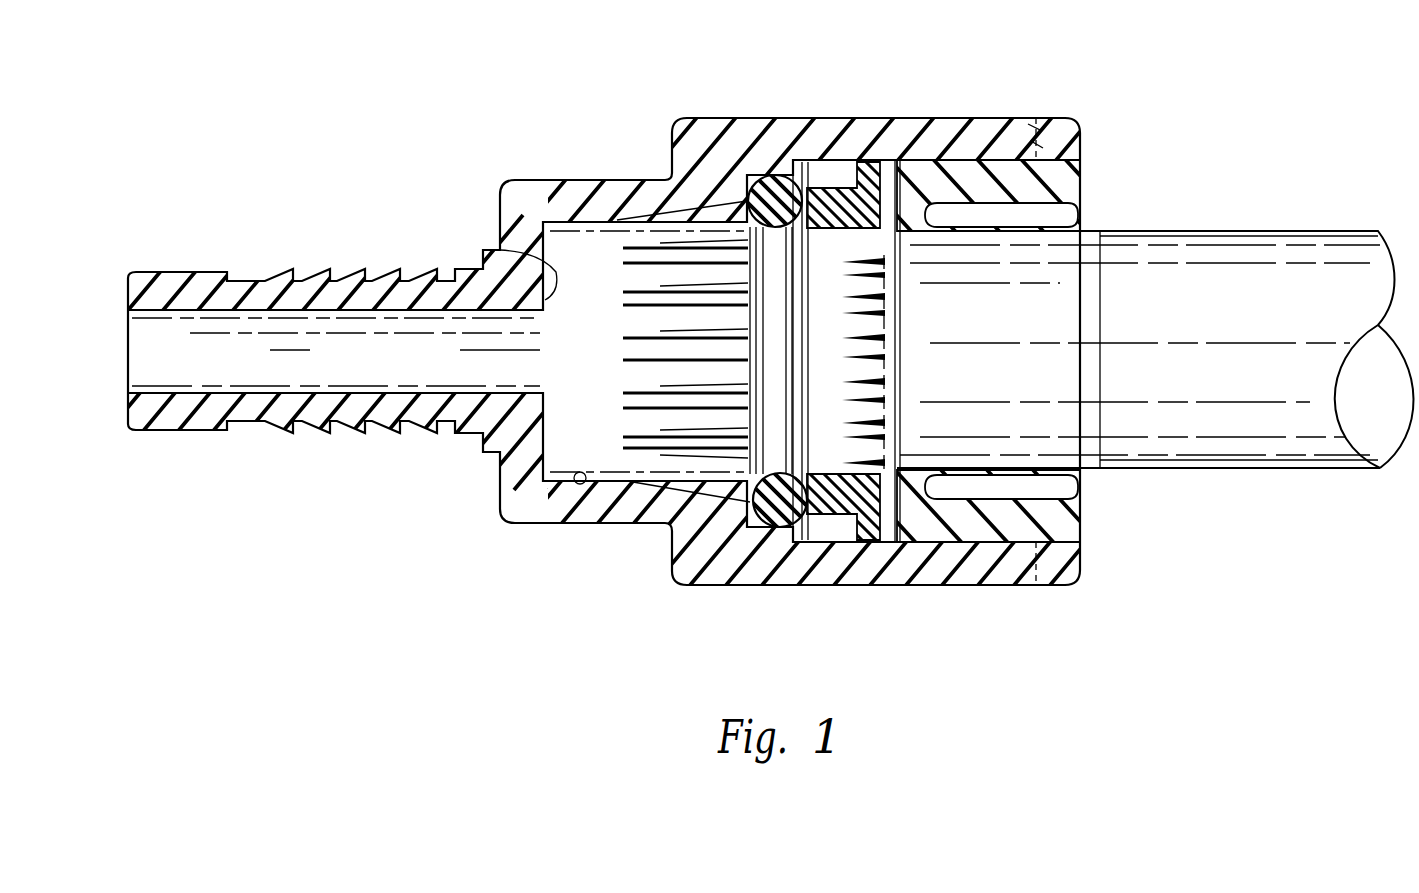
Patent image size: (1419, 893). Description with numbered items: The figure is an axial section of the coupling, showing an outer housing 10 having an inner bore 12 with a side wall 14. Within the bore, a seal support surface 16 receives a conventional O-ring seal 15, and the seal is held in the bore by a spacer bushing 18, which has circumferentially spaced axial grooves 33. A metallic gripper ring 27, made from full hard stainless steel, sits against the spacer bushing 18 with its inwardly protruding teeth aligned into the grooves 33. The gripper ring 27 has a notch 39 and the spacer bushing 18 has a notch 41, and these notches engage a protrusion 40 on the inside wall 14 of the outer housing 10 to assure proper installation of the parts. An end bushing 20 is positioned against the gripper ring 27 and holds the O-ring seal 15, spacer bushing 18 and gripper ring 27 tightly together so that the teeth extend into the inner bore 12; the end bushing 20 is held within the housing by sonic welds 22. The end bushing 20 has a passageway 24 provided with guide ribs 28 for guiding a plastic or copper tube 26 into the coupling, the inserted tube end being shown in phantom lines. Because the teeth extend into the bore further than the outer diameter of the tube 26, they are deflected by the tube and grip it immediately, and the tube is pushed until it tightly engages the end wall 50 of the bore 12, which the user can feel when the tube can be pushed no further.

The outer housing 10 is at (977, 556).
The inner bore 12 is at (637, 503).
The side wall 14 is at (586, 480).
The O-ring seal 15 is at (752, 180).
The seal support surface 16 is at (797, 527).
The spacer bushing 18 is at (853, 186).
The end bushing 20 is at (1080, 165).
The sonic welds 22 is at (1046, 124).
The passageway 24 is at (1042, 488).
The tube 26 is at (1321, 231).
The gripper ring 27 is at (898, 536).
The guide ribs 28 is at (1076, 215).
The axial grooves 33 is at (862, 240).
The notch 39 is at (893, 250).
The protrusion 40 is at (783, 176).
The notch 41 is at (887, 248).
The end wall 50 is at (483, 250).